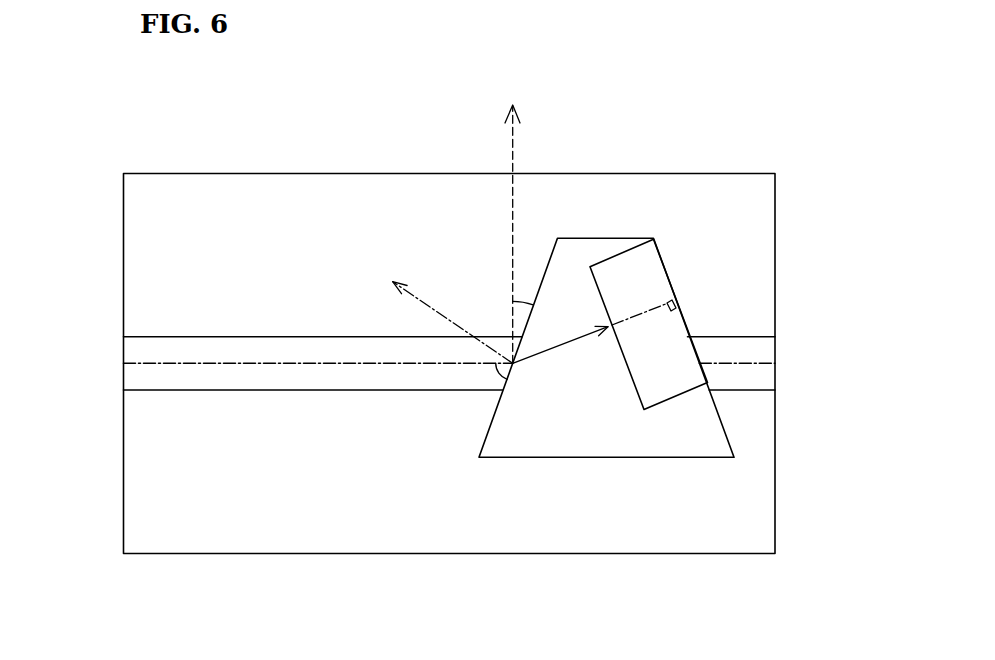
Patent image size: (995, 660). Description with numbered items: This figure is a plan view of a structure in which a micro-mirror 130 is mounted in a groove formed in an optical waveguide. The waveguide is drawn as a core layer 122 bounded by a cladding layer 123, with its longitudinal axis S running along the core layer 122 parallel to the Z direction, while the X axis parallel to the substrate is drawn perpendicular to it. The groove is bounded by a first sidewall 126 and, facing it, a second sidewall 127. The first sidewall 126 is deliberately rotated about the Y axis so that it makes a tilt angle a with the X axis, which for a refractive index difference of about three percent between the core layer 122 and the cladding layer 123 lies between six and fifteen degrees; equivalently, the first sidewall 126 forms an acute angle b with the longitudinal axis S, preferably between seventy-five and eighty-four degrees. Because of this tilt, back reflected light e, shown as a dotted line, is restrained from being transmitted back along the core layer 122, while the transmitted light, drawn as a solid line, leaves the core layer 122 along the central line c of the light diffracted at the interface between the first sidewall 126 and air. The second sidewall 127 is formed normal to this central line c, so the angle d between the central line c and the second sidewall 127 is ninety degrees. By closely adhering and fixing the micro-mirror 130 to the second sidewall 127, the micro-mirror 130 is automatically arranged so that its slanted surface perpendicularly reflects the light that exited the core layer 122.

The core layer 122 is at (765, 353).
The cladding layer 123 is at (757, 268).
The first sidewall 126 is at (553, 260).
The second sidewall 127 is at (670, 283).
The micro-mirror 130 is at (663, 373).
The X axis X is at (512, 220).
The longitudinal axis S is at (319, 363).
The tilt angle a is at (525, 302).
The acute angle b is at (497, 372).
The central line of the diffracted light c is at (558, 345).
The angle between central line and second sidewall d is at (668, 305).
The back reflected light e is at (440, 310).